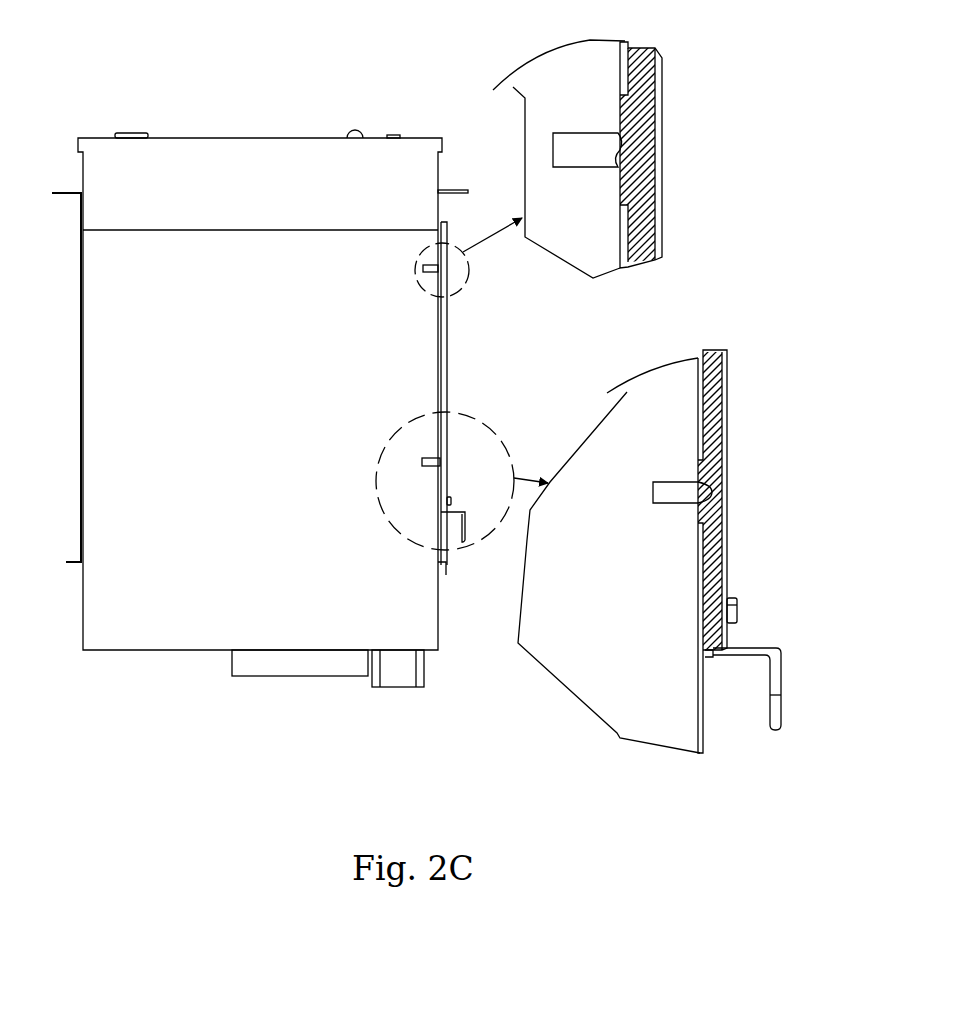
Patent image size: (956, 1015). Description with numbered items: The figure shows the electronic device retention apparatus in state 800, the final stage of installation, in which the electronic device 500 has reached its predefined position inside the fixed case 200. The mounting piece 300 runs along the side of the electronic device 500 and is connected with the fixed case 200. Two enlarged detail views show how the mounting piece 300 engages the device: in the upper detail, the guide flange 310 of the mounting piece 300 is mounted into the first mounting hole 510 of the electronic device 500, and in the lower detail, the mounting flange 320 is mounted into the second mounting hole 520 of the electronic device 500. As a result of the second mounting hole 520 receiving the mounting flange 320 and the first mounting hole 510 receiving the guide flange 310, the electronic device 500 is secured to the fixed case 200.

The state 800 is at (72, 48).
The electronic device 500 is at (240, 185).
The fixed case 200 is at (80, 382).
The mounting piece 300 is at (450, 382).
The first mounting hole 510 is at (586, 147).
The guide flange 310 is at (640, 147).
The second mounting hole 520 is at (667, 492).
The mounting flange 320 is at (700, 493).